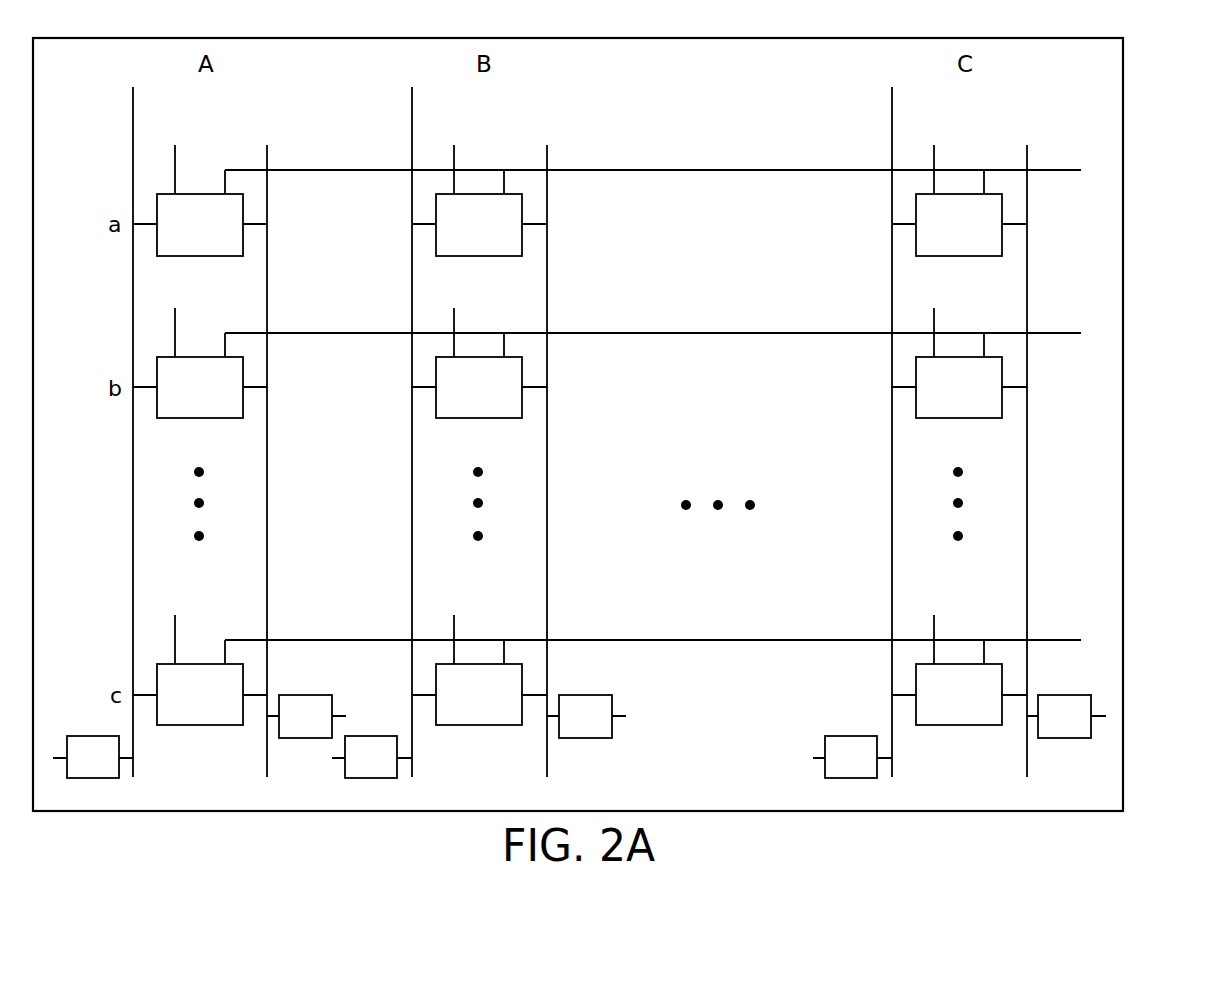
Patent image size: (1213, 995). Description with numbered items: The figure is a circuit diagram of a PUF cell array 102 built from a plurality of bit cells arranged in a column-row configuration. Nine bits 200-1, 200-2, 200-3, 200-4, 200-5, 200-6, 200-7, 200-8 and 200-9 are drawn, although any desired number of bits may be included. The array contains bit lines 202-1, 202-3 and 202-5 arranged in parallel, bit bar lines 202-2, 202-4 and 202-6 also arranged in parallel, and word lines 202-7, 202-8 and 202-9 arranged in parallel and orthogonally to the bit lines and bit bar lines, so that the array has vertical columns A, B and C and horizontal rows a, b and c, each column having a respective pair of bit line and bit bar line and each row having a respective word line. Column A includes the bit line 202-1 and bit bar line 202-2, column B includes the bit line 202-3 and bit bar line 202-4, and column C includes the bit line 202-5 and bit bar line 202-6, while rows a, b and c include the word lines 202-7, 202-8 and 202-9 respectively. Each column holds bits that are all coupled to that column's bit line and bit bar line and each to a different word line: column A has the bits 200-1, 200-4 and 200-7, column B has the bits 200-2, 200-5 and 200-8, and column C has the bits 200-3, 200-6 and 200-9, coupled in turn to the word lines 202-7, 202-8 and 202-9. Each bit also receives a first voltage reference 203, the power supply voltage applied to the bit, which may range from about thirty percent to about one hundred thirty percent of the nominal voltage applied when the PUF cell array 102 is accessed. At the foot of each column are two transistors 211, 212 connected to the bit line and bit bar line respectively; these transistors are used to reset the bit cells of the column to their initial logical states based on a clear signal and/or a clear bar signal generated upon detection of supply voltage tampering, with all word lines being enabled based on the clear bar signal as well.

The PUF cell array 102 is at (1123, 422).
The bit 200-1 is at (172, 241).
The bit 200-2 is at (451, 241).
The bit 200-3 is at (931, 241).
The bit 200-4 is at (172, 404).
The bit 200-5 is at (451, 404).
The bit 200-6 is at (931, 404).
The bit 200-7 is at (172, 712).
The bit 200-8 is at (451, 712).
The bit 200-9 is at (931, 712).
The bit line 202-1 is at (133, 102).
The bit bar line 202-2 is at (268, 146).
The bit line 202-3 is at (412, 102).
The bit bar line 202-4 is at (548, 146).
The bit line 202-5 is at (892, 102).
The bit bar line 202-6 is at (1028, 146).
The word line 202-7 is at (722, 168).
The word line 202-8 is at (722, 331).
The word line 202-9 is at (722, 638).
The first voltage reference 203 is at (554, 391).
The transistor 211 is at (74, 773).
The transistor 212 is at (286, 733).